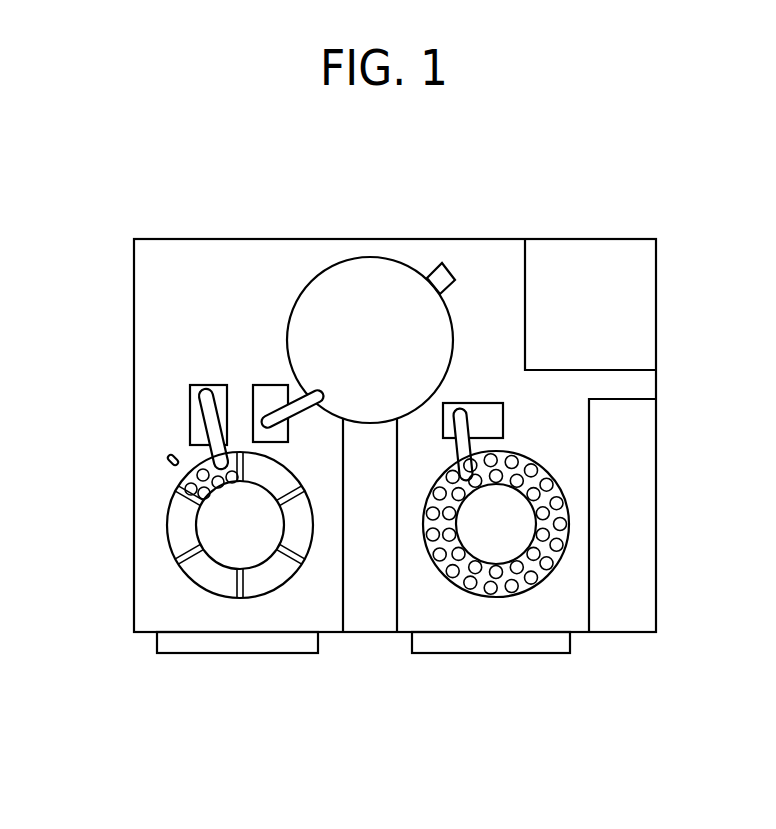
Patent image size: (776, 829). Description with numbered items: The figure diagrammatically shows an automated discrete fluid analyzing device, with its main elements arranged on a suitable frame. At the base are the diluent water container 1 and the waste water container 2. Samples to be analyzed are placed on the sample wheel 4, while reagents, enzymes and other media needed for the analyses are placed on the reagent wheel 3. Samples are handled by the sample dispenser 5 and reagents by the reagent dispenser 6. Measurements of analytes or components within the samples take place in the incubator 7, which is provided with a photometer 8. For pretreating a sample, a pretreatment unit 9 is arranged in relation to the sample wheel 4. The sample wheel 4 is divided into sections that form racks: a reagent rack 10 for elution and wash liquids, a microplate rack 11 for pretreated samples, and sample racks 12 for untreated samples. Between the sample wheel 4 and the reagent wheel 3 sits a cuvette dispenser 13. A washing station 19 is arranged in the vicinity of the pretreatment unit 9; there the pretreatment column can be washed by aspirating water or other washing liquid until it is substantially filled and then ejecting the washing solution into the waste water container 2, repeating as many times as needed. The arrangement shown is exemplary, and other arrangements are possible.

The diluent water container 1 is at (558, 645).
The waste water container 2 is at (178, 648).
The reagent wheel 3 is at (500, 546).
The sample wheel 4 is at (178, 616).
The sample dispenser 5 is at (267, 390).
The reagent dispenser 6 is at (495, 418).
The incubator 7 is at (342, 287).
The photometer 8 is at (440, 282).
The pretreatment unit 9 is at (216, 430).
The reagent rack 10 is at (182, 487).
The microplate rack 11 is at (263, 482).
The sample racks 12 is at (263, 575).
The cuvette dispenser 13 is at (360, 605).
The washing station 19 is at (165, 457).